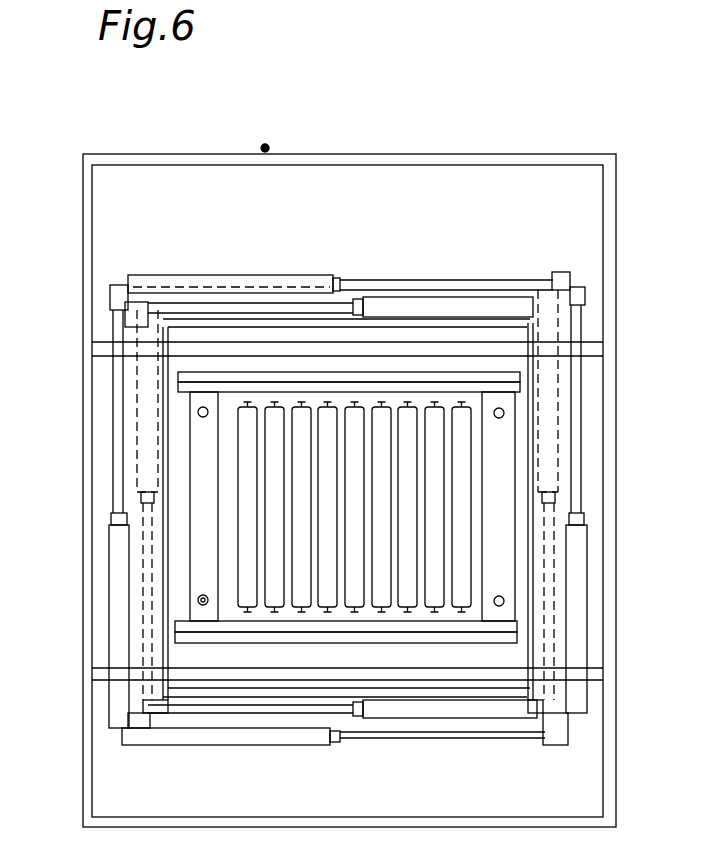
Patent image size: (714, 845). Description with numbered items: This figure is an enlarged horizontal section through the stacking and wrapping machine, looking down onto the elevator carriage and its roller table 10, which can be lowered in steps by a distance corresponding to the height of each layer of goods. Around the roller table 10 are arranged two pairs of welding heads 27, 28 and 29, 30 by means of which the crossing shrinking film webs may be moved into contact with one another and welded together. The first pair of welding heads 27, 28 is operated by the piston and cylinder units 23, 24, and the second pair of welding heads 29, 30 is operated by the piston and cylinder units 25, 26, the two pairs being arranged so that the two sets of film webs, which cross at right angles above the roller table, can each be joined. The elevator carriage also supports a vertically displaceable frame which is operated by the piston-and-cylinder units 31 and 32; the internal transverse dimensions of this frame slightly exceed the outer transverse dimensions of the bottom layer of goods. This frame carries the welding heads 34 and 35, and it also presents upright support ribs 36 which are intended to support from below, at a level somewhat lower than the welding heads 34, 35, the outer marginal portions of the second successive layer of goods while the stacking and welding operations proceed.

The roller table 10 is at (247, 440).
The piston and cylinder unit 23 is at (253, 306).
The piston and cylinder unit 24 is at (213, 283).
The piston and cylinder unit 25 is at (118, 395).
The piston and cylinder unit 26 is at (150, 452).
The welding head 27 is at (155, 368).
The welding head 28 is at (542, 392).
The welding head 29 is at (290, 327).
The welding head 30 is at (400, 692).
The piston-and-cylinder unit 31 is at (202, 605).
The piston-and-cylinder unit 32 is at (206, 606).
The welding head 34 is at (216, 522).
The welding head 35 is at (345, 385).
The upright support rib 36 is at (475, 372).